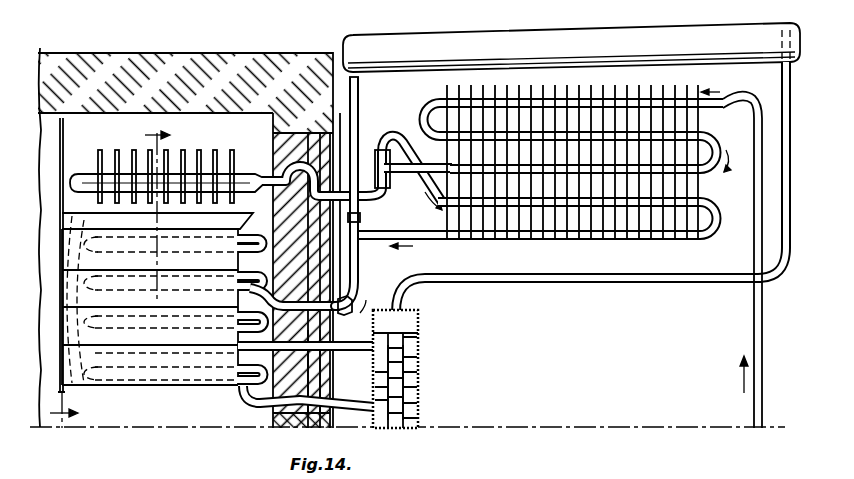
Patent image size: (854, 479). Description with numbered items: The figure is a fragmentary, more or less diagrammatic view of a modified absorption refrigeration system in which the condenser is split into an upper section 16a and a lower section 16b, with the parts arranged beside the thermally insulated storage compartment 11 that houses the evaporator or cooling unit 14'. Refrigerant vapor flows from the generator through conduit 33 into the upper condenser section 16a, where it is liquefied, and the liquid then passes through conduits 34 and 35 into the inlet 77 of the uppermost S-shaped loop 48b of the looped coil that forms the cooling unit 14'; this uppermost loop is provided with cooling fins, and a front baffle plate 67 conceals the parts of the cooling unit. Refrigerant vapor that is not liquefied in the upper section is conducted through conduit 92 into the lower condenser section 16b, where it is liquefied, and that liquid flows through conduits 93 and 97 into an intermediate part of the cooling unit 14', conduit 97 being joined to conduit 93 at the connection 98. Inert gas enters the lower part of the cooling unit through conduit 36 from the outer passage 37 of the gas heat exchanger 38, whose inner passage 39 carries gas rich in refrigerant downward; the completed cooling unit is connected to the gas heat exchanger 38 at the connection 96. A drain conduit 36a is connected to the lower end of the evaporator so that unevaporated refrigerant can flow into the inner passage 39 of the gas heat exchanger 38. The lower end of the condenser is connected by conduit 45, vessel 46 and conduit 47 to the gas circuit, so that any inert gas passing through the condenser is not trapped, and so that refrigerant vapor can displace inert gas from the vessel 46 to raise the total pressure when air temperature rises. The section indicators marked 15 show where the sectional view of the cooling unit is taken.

The storage compartment 11 is at (158, 421).
The cooling unit 14' is at (157, 319).
The section line 15- 15 is at (123, 279).
The upper condenser section 16a is at (428, 113).
The lower condenser section 16b is at (705, 232).
The conduit 33 is at (752, 338).
The conduit 34 is at (396, 196).
The conduit 35 is at (272, 142).
The conduit 36 is at (308, 371).
The drain conduit 36a is at (262, 412).
The outer passage 37 is at (412, 346).
The gas heat exchanger 38 is at (415, 406).
The inner passage 39 is at (405, 379).
The conduit 45 is at (356, 101).
The vessel 46 is at (415, 44).
The conduit 47 is at (592, 284).
The uppermost S-shaped loop 48b is at (112, 172).
The baffle plate 67 is at (63, 168).
The inlet end 77 is at (272, 178).
The conduit 92 is at (400, 142).
The conduit 93 is at (359, 263).
The connection 96 is at (368, 352).
The conduit 97 is at (250, 300).
The connection 98 is at (352, 298).